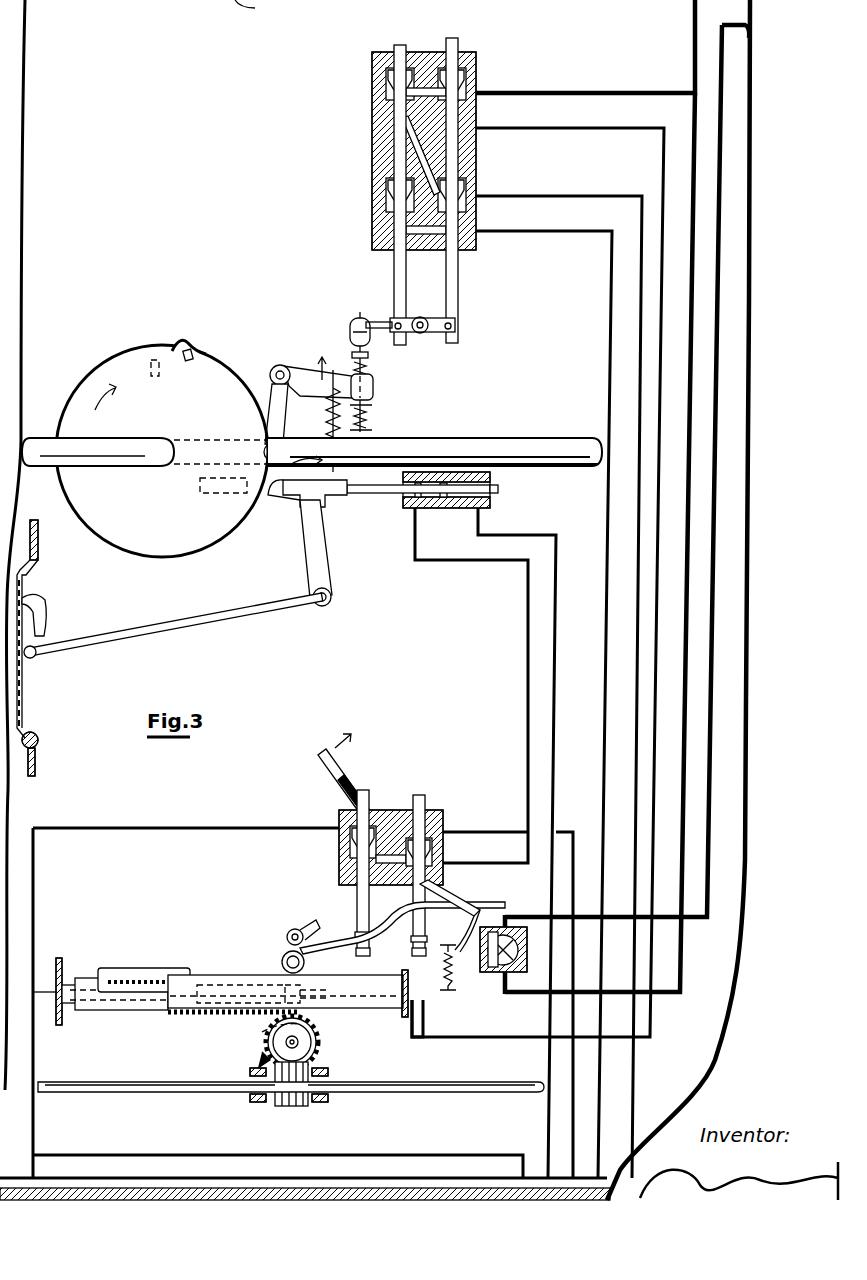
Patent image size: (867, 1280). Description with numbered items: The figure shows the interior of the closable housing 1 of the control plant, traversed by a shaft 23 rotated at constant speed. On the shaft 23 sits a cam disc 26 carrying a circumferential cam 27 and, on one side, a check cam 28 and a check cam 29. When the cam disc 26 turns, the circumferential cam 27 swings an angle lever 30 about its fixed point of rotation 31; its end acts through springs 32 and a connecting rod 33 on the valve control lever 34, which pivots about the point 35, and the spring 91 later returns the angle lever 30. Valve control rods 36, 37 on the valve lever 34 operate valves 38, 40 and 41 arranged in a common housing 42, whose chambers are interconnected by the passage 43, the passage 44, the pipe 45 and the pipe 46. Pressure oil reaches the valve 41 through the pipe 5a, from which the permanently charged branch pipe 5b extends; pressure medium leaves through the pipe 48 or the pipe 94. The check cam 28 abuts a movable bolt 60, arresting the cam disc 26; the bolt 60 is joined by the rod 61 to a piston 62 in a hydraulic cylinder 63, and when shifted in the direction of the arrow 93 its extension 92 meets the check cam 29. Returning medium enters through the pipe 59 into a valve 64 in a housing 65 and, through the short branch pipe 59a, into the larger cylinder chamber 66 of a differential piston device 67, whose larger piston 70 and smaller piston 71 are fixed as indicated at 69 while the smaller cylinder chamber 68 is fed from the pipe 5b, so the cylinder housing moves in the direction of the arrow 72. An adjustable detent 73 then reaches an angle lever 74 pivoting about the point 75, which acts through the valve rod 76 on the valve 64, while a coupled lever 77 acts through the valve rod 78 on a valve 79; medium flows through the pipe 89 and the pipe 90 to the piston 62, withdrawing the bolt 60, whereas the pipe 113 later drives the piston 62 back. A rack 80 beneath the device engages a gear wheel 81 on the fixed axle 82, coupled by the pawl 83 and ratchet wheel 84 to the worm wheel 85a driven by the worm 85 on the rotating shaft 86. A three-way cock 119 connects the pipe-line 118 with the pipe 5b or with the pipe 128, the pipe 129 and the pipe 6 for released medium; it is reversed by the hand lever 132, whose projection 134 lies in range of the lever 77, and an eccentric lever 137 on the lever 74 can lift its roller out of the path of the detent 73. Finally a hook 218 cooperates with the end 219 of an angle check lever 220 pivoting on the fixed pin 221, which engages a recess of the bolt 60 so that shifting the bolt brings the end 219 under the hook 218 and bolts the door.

The housing 1 is at (185, 0).
The pressure oil pipe 5a is at (264, 12).
The branch pipe 5b is at (693, 70).
The pipe for pressure medium released from pressure 6 is at (228, 1155).
The shaft 23 is at (498, 452).
The cam disc 26 is at (106, 362).
The circumferential cam 27 is at (180, 340).
The check cam 28 is at (195, 352).
The check cam 29 is at (161, 378).
The angle lever 30 is at (388, 82).
The point of rotation 31 is at (280, 365).
The springs 32 is at (373, 400).
The connecting rod 33 is at (372, 420).
The valve control lever 34 is at (375, 320).
The pivot point 35 is at (418, 336).
The valve control rod 36 is at (396, 290).
The valve control rod 37 is at (456, 290).
The valve 38 is at (388, 196).
The valve 40 is at (466, 192).
The valve 41 is at (466, 78).
The housing 42 is at (378, 112).
The passage 43 is at (425, 78).
The passage 44 is at (428, 240).
The pipe 45 is at (410, 148).
The pipe 46 is at (460, 142).
The pipe 48 is at (580, 192).
The pipe 59 is at (192, 830).
The short branch pipe 59a is at (45, 992).
The check bolt 60 is at (322, 507).
The rod 61 is at (385, 492).
The piston 62 is at (442, 508).
The hydraulic cylinder 63 is at (498, 492).
The valve 64 is at (342, 838).
The housing 65 is at (340, 868).
The larger cylinder chamber 66 is at (170, 1015).
The differential piston device 67 is at (265, 985).
The smaller cylinder chamber 68 is at (240, 985).
The fixed mounting of pistons 69 is at (58, 1028).
The larger piston 70 is at (70, 1000).
The smaller piston 71 is at (352, 1000).
The arrow 72 is at (200, 968).
The adjustable detent 73 is at (148, 958).
The angle lever 74 is at (318, 950).
The axle 75 is at (285, 940).
The valve rod 76 is at (357, 910).
The lever 77 is at (485, 908).
The valve rod 78 is at (440, 895).
The valve 79 is at (442, 855).
The rack 80 is at (226, 1018).
The gear wheel 81 is at (262, 1058).
The fixed axle 82 is at (320, 1035).
The pawl 83 is at (318, 1050).
The ratchet wheel 84 is at (400, 1012).
The worm 85 is at (298, 1104).
The worm wheel 85a is at (266, 1040).
The shaft 86 is at (160, 1092).
The pipe 89 is at (393, 888).
The pipe 90 is at (527, 650).
The spring 91 is at (330, 430).
The extension 92 is at (205, 494).
The arrow 93 is at (278, 490).
The pipe 94 is at (646, 130).
The pipe 113 is at (556, 598).
The pipe-line 118 is at (713, 917).
The three-way cock 119 is at (500, 994).
The pipe 128 is at (520, 995).
The pipe 129 is at (568, 240).
The hand lever 132 is at (342, 770).
The projection 134 is at (450, 975).
The eccentric lever 137 is at (300, 930).
The hook 218 is at (48, 615).
The end of angle check lever 219 is at (40, 658).
The angle check lever 220 is at (228, 622).
The fixed pin 221 is at (332, 568).